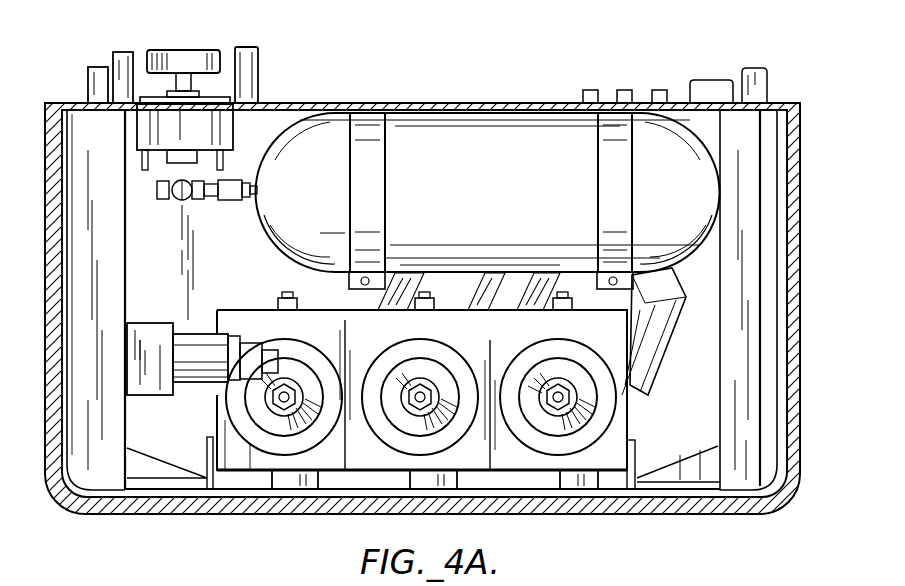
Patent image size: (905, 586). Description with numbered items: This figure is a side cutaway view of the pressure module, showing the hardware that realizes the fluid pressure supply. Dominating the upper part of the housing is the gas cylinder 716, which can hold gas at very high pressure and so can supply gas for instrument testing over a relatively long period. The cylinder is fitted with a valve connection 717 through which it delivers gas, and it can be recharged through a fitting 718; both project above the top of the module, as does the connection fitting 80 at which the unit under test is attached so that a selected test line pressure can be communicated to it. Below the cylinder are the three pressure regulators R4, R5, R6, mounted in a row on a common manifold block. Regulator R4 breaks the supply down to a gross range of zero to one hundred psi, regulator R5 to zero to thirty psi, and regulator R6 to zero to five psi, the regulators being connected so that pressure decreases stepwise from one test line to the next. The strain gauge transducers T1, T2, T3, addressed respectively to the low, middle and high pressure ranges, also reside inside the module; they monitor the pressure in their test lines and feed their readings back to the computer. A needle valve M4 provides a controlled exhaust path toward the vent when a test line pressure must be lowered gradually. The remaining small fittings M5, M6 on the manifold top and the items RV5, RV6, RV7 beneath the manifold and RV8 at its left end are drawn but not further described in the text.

The gas cylinder 716 is at (493, 150).
The valve connection 717 is at (190, 60).
The fitting 718 is at (117, 52).
The connection fitting 80 is at (247, 48).
The low pressure transducer T1 is at (650, 300).
The middle pressure transducer T2 is at (528, 277).
The high pressure transducer T3 is at (402, 277).
The needle valve M4 is at (283, 296).
The mounting bolt M5 is at (432, 298).
The mounting bolt M6 is at (570, 298).
The pressure regulator R4 is at (296, 407).
The pressure regulator R5 is at (440, 407).
The pressure regulator R6 is at (578, 408).
The relief valve RV5 is at (290, 478).
The relief valve RV6 is at (457, 478).
The relief valve RV7 is at (597, 486).
The relief valve RV8 is at (193, 347).